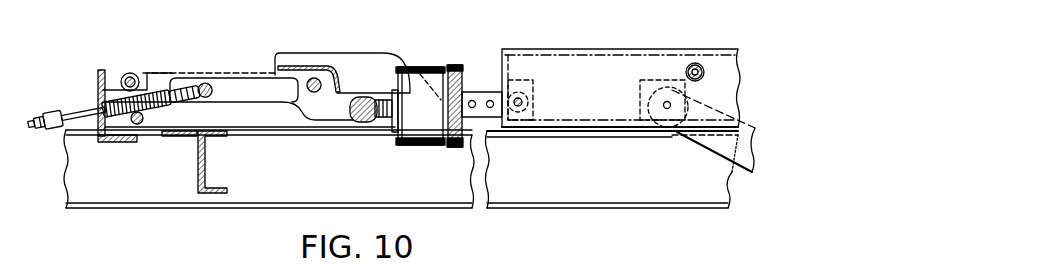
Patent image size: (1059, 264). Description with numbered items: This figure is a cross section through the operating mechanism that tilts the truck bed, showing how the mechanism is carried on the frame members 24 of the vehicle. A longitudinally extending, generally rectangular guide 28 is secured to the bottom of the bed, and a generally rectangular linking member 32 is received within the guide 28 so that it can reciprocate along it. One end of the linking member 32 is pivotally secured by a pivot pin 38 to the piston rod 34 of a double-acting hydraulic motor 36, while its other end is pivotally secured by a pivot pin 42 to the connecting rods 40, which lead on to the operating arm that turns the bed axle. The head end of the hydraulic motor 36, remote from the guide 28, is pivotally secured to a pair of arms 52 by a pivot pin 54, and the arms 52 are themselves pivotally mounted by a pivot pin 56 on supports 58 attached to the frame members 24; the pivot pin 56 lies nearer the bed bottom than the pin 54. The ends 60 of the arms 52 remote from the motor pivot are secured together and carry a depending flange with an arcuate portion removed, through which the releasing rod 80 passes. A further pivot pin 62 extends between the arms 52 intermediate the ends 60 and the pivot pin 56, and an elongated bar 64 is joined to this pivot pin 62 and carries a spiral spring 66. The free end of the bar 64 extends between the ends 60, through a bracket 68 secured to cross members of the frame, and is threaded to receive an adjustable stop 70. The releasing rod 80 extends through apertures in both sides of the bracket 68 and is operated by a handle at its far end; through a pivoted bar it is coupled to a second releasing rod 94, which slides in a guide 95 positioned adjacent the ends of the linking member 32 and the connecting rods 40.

The frame member 24 is at (600, 198).
The guide 28 is at (535, 50).
The linking member 32 is at (558, 62).
The piston rod 34 is at (478, 100).
The double-acting hydraulic motor 36 is at (427, 73).
The pivot pin 38 is at (518, 120).
The connecting rod 40 is at (740, 168).
The pivot pin 42 is at (667, 110).
The arm 52 is at (285, 100).
The pivot pin 54 is at (366, 133).
The pivot pin 56 is at (316, 79).
The support 58 is at (376, 56).
The end of arm 60 is at (139, 77).
The pivot pin 62 is at (206, 86).
The elongated bar 64 is at (83, 112).
The spiral spring 66 is at (163, 93).
The bracket 68 is at (98, 82).
The adjustable stop 70 is at (46, 119).
The releasing rod 80 is at (143, 124).
The second releasing rod 94 is at (703, 82).
The guide 95 is at (702, 71).